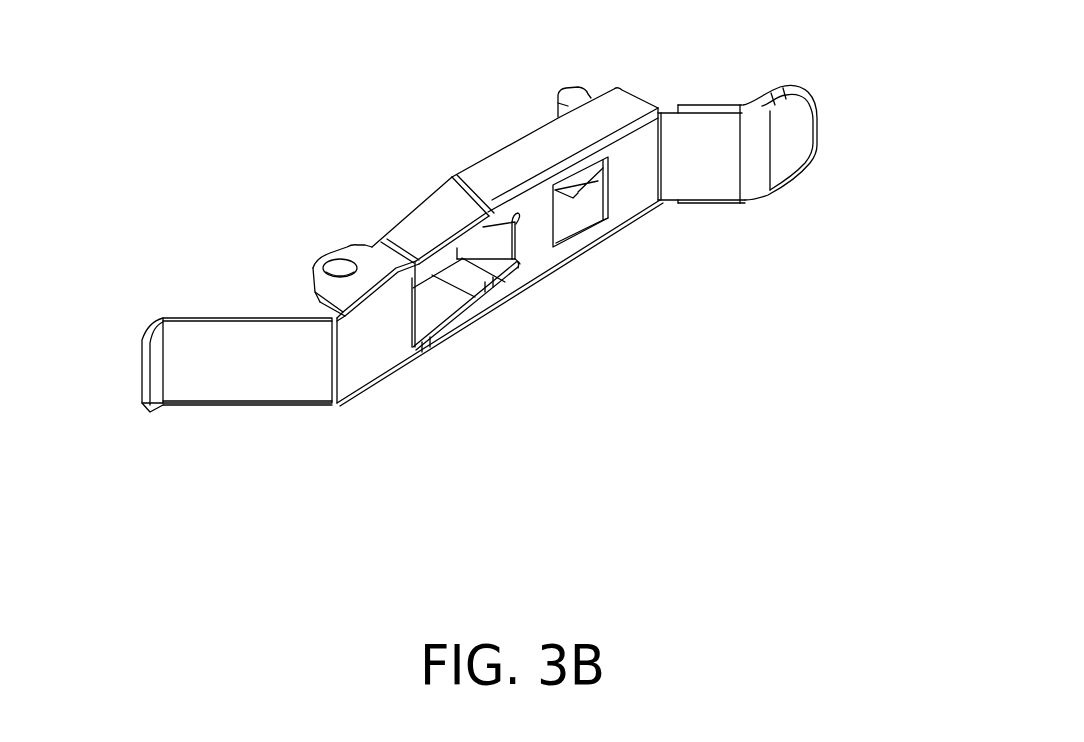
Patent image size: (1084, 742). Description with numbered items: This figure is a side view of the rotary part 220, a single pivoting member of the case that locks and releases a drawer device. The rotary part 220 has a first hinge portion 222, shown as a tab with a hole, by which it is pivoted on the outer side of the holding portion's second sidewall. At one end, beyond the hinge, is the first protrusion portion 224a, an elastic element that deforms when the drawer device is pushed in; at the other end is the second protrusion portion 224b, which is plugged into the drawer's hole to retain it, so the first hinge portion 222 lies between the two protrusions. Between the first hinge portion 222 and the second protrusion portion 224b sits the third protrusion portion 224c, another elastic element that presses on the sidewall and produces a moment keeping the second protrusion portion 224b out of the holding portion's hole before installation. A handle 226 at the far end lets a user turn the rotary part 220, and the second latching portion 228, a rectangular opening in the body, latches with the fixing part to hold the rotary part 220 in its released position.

The rotary part 220 is at (533, 268).
The first hinge portion 222 is at (338, 268).
The first protrusion portion 224a is at (259, 361).
The second protrusion portion 224b is at (558, 108).
The third protrusion portion 224c is at (492, 248).
The handle 226 is at (797, 145).
The second latching portion 228 is at (606, 168).